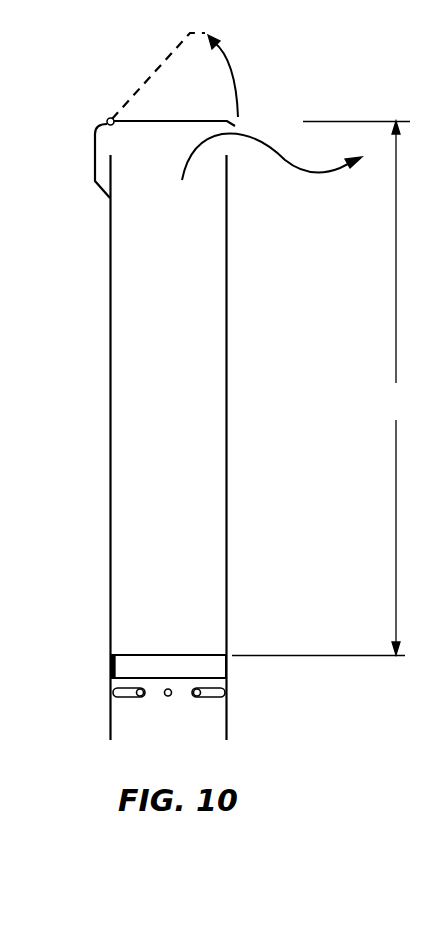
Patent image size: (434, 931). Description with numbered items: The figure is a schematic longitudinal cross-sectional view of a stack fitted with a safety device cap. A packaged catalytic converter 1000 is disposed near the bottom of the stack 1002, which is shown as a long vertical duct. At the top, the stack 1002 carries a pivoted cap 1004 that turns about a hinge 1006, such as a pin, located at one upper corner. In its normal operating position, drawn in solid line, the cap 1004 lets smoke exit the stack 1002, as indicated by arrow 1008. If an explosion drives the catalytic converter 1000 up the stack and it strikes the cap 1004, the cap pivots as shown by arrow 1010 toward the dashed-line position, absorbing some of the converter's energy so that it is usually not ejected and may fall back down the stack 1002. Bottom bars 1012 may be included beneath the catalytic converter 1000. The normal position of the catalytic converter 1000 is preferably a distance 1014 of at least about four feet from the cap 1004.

The packaged catalytic converter 1000 is at (172, 660).
The stack 1002 is at (228, 355).
The pivoted cap 1004 is at (238, 120).
The hinge 1006 is at (106, 121).
The arrow 1008 is at (297, 173).
The arrow 1010 is at (233, 73).
The bottom bars 1012 is at (193, 696).
The distance 1014 is at (326, 388).